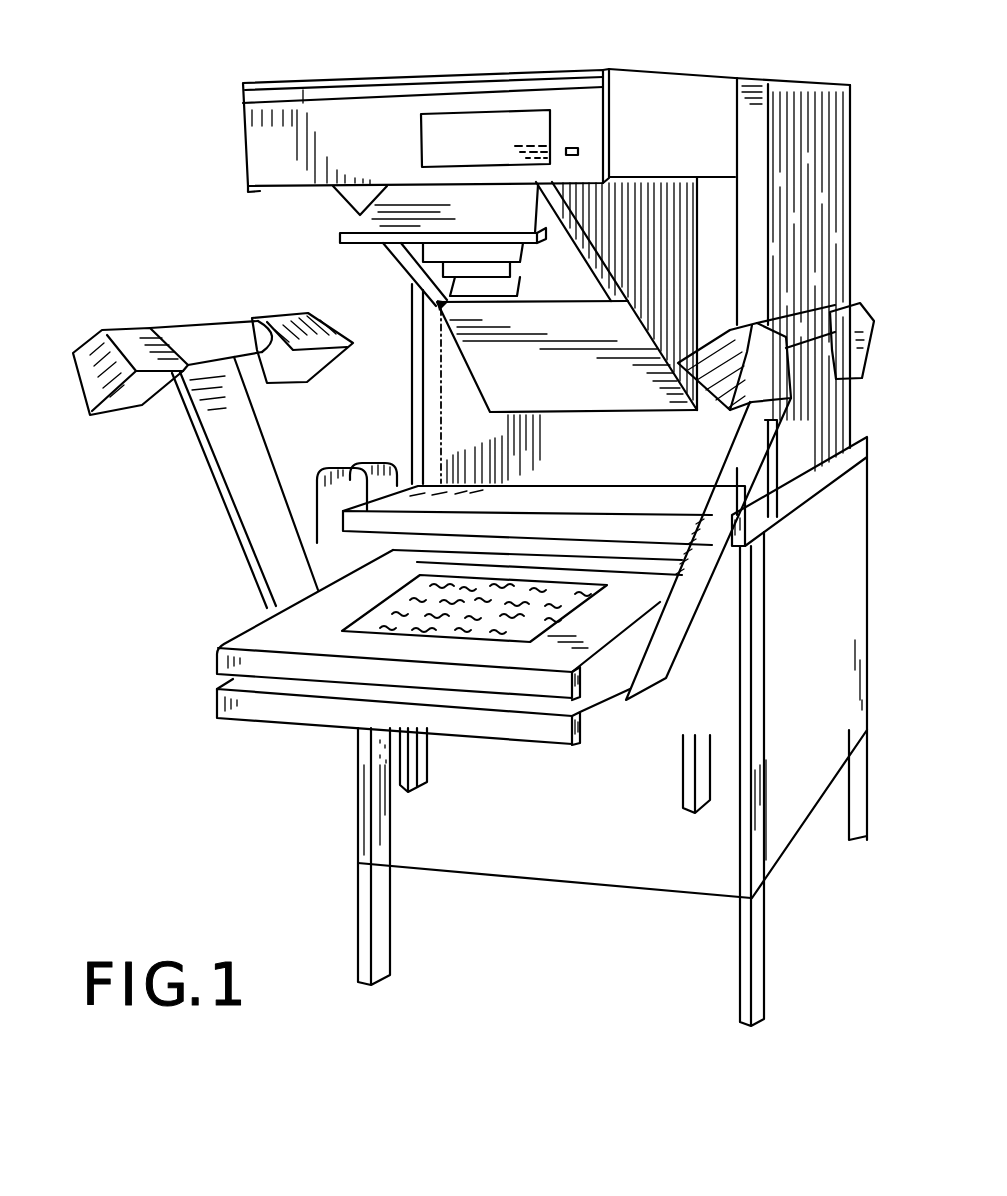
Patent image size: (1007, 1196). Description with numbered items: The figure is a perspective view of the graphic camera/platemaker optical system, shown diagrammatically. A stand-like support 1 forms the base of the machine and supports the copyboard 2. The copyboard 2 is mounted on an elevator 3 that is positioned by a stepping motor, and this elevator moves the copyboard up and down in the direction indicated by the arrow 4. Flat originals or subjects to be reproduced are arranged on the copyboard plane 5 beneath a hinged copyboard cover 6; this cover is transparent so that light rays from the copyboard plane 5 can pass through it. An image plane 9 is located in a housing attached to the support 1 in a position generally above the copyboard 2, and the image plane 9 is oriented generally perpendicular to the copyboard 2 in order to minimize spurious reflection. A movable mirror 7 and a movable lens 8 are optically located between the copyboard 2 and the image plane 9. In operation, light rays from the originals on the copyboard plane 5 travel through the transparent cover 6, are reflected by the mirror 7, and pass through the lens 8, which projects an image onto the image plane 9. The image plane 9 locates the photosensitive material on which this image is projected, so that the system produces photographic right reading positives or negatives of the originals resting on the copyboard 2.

The stand-like support 1 is at (206, 69).
The copyboard 2 is at (232, 658).
The elevator 3 is at (693, 677).
The arrow 4 is at (168, 422).
The copyboard plane 5 is at (532, 649).
The hinged copyboard cover 6 is at (395, 652).
The movable mirror 7 is at (364, 213).
The movable lens 8 is at (455, 248).
The image plane 9 is at (632, 208).